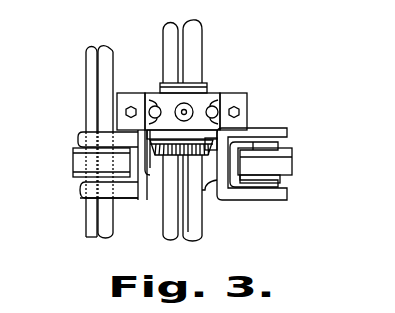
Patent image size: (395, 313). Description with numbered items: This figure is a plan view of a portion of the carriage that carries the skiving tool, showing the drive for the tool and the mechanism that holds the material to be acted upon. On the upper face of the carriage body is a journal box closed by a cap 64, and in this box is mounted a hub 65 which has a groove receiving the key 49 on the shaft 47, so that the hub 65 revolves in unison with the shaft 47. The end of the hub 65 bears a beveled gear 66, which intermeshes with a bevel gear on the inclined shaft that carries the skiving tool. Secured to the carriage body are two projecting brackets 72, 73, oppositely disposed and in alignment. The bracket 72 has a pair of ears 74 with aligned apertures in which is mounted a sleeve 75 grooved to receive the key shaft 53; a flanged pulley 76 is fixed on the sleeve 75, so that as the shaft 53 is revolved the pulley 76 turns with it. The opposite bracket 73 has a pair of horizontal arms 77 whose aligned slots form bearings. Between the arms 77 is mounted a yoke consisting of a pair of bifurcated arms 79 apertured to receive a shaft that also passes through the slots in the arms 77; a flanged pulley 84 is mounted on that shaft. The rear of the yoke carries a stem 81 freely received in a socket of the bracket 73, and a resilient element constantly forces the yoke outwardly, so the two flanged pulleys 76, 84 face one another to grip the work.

The shaft 47 is at (164, 233).
The key 49 is at (188, 212).
The key shaft 53 is at (86, 92).
The cap 64 is at (212, 97).
The hub 65 is at (205, 86).
The beveled gear 66 is at (158, 157).
The projecting bracket 72 is at (125, 94).
The projecting bracket 73 is at (247, 98).
The ears 74 is at (80, 138).
The sleeve 75 is at (84, 198).
The flanged pulley 76 is at (80, 163).
The horizontal arms 77 is at (287, 128).
The bifurcated arms 79 is at (282, 183).
The stem 81 is at (240, 162).
The flanged pulley 84 is at (292, 163).